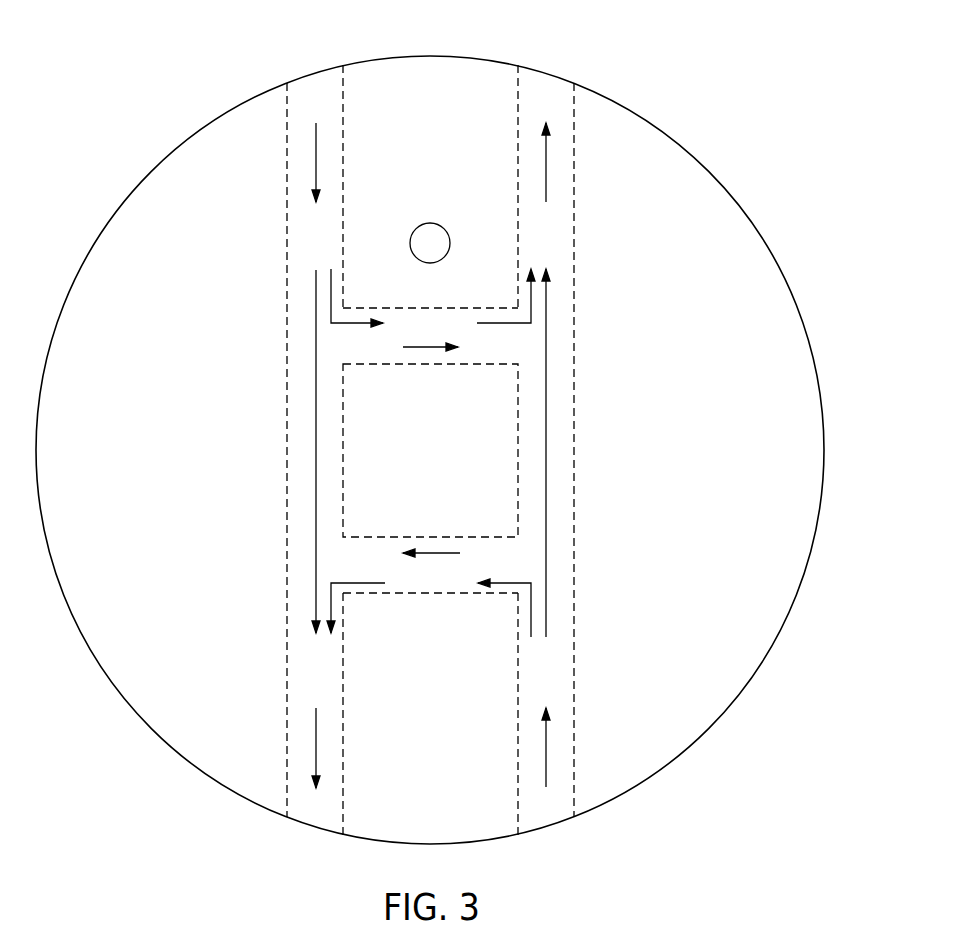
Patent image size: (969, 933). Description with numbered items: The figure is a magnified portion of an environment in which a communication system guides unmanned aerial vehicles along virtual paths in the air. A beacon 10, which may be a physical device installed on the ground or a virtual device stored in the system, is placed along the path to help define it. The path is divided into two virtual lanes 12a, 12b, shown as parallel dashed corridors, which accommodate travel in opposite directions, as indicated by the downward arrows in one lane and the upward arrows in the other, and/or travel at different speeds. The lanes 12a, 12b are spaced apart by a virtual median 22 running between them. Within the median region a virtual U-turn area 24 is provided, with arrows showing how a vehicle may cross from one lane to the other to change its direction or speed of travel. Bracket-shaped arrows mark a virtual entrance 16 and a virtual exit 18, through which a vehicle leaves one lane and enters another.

The beacon 10 is at (430, 223).
The virtual lane 12a is at (314, 95).
The virtual lane 12b is at (550, 90).
The virtual entrance 16 is at (531, 292).
The virtual exit 18 is at (331, 292).
The virtual median 22 is at (427, 72).
The virtual U-turn area 24 is at (462, 456).